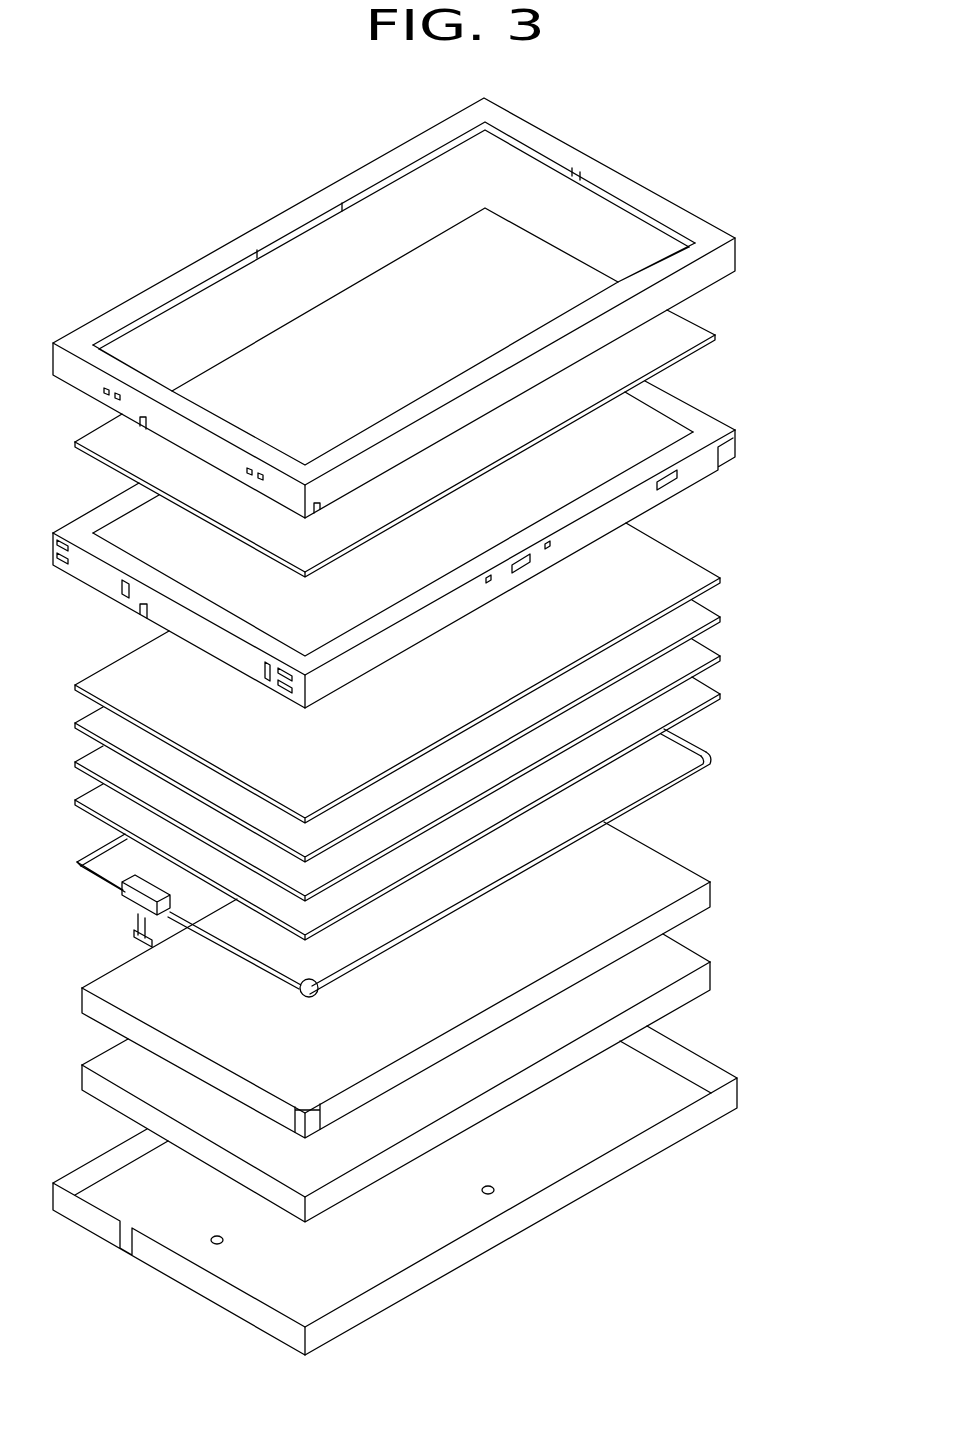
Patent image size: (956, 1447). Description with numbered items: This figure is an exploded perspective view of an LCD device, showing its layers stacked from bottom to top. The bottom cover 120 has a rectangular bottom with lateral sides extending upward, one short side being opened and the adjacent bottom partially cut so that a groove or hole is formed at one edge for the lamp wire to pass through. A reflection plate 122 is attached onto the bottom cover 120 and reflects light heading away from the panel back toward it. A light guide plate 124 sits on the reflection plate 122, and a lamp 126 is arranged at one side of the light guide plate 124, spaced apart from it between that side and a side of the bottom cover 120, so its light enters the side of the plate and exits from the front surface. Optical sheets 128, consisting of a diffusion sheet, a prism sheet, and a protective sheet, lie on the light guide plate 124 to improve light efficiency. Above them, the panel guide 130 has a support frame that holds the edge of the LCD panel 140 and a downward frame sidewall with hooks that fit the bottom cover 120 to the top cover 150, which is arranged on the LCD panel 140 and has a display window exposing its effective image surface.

The top cover 150 is at (727, 253).
The LCD panel 140 is at (700, 335).
The panel guide 130 is at (727, 430).
The optical sheets 128 is at (740, 582).
The lamp 126 is at (716, 757).
The light guide plate 124 is at (712, 885).
The reflection plate 122 is at (713, 966).
The bottom cover 120 is at (739, 1088).